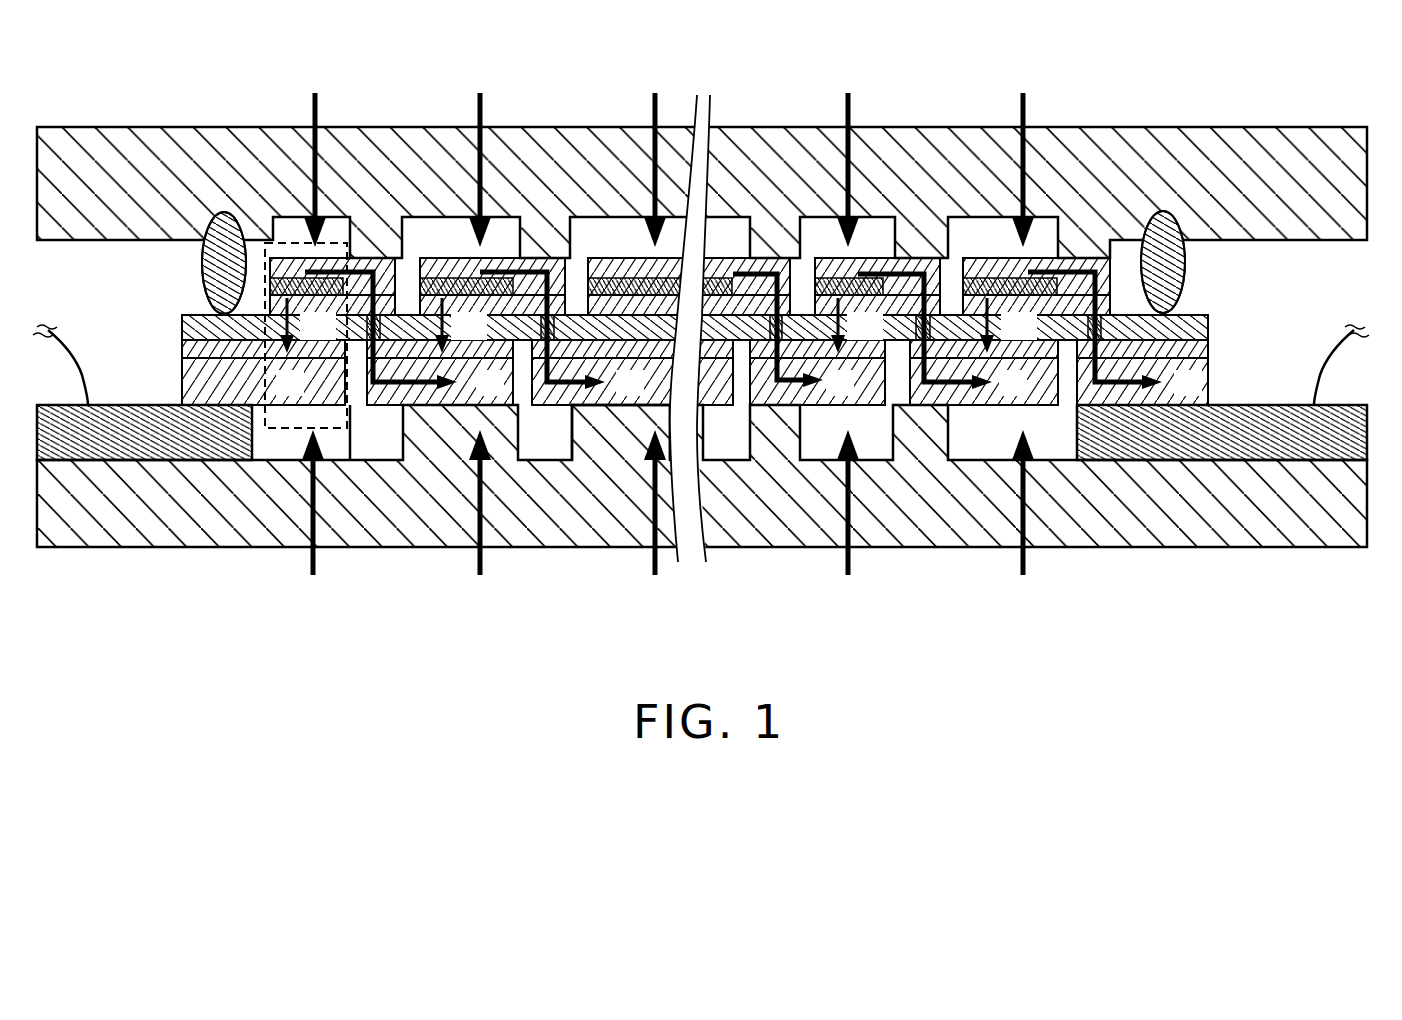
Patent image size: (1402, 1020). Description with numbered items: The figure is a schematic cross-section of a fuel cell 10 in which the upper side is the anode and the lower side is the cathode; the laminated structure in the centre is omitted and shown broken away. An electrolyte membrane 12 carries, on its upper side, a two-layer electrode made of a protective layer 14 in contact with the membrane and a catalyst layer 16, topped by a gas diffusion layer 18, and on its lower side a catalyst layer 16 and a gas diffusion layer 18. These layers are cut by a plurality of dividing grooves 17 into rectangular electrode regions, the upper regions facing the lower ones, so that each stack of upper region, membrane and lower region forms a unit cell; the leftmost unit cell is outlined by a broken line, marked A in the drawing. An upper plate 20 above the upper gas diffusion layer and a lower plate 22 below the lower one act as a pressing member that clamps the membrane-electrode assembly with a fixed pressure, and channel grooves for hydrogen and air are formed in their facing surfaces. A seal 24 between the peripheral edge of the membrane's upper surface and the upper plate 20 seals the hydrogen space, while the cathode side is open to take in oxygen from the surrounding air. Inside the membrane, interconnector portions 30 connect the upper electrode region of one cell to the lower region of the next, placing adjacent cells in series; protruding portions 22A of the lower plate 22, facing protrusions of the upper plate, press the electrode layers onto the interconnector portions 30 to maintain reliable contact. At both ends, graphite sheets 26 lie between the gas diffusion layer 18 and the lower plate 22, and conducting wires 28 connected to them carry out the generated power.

The fuel cell 10 is at (1178, 80).
The electrolyte membrane 12 is at (182, 322).
The protective layer 14 is at (1120, 307).
The catalyst layer 16 is at (322, 278).
The dividing groove 17 is at (410, 300).
The gas diffusion layer 18 is at (457, 256).
The upper plate 20 is at (226, 127).
The lower plate 22 is at (432, 548).
The protruding portion 22A is at (572, 430).
The seal 24 is at (201, 268).
The graphite sheet 26 is at (100, 405).
The conducting wire 28 is at (74, 365).
The interconnector portion 30 is at (402, 295).
The region A is at (282, 430).